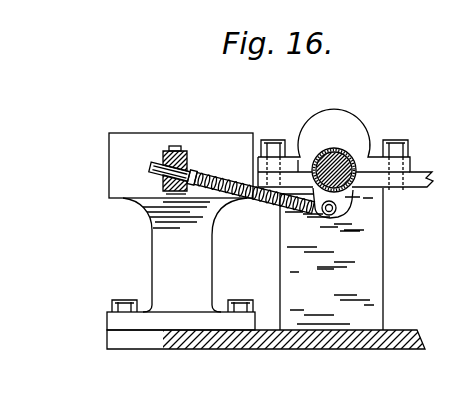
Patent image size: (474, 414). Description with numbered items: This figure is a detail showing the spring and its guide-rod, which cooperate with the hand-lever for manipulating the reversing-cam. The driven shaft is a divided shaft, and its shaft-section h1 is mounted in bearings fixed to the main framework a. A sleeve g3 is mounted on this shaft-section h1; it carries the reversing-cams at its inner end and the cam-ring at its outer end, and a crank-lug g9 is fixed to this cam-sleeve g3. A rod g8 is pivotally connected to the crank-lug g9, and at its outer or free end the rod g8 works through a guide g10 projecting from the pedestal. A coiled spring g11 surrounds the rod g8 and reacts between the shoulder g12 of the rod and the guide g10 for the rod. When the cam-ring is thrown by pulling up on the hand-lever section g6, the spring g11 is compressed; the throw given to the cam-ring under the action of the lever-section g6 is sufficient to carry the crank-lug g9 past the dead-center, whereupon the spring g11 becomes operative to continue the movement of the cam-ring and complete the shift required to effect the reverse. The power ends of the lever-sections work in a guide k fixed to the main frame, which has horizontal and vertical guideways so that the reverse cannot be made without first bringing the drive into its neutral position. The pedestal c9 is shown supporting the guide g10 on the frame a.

The stand c9 is at (157, 259).
The main framework a is at (378, 311).
The crank-lug g9 is at (366, 206).
The sleeve g3 is at (349, 157).
The shaft-section h1 is at (330, 165).
The shoulder g12 is at (318, 213).
The coiled spring g11 is at (208, 178).
The rod g8 is at (272, 190).
The guide g10 is at (163, 191).
The guide k is at (473, 112).
The hand-lever section g6 is at (472, 143).